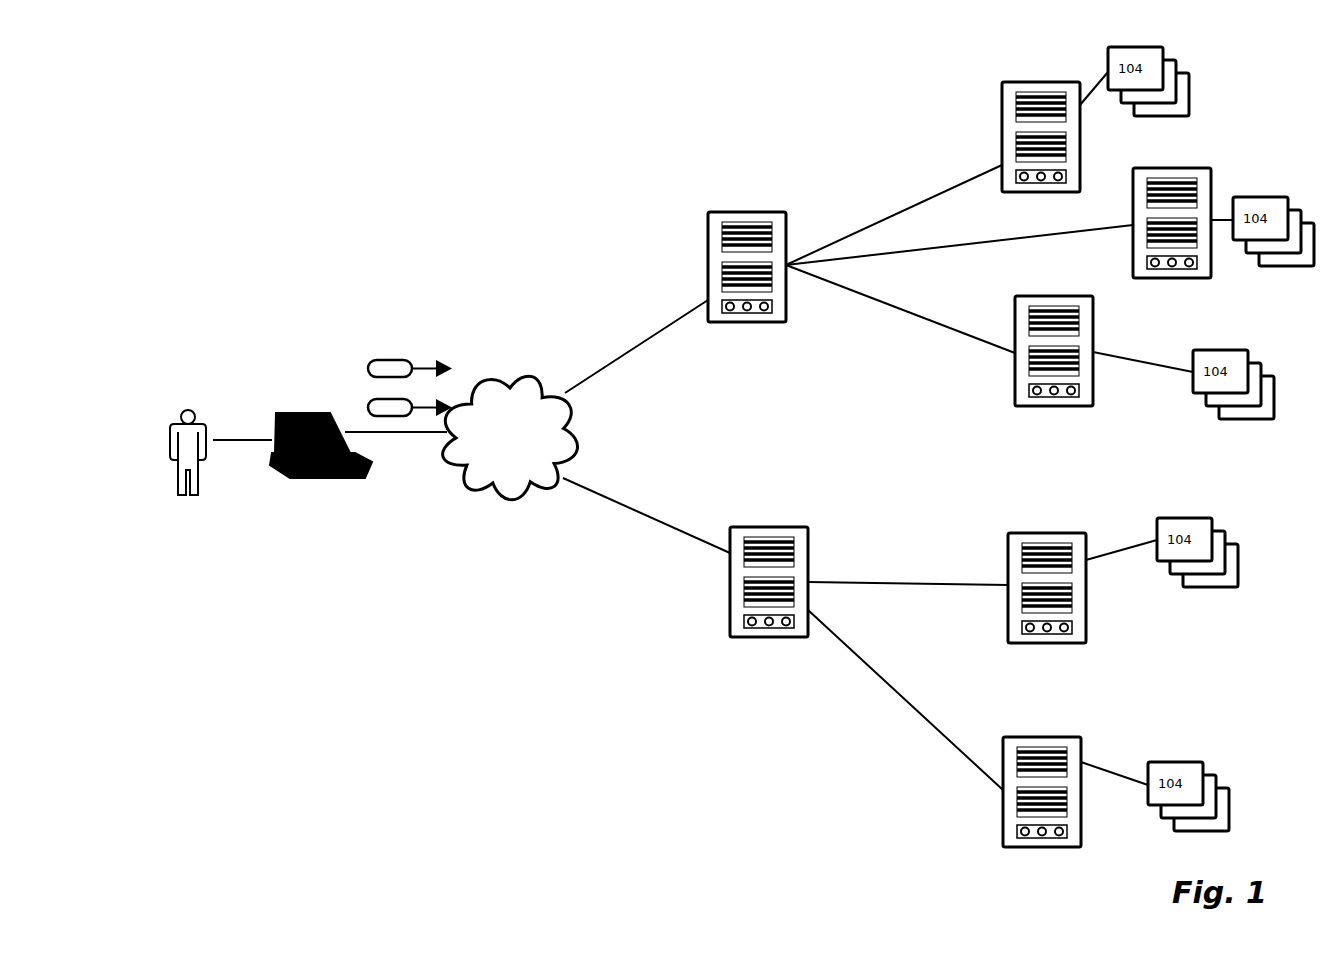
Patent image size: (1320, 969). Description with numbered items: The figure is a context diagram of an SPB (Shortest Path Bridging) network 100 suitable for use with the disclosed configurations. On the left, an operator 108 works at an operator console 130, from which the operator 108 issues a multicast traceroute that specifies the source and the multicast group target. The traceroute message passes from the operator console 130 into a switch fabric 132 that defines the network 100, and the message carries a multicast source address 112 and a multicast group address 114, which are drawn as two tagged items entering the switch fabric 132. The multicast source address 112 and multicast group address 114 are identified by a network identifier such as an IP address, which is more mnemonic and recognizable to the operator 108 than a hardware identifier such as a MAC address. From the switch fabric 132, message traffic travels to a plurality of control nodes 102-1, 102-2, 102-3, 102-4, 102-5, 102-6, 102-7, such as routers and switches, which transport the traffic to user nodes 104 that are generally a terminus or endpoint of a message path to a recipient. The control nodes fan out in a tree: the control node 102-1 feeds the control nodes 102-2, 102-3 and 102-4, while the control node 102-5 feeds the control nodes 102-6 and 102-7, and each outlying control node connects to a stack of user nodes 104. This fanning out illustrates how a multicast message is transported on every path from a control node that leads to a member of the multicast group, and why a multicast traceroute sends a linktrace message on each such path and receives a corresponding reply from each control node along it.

The SPB network 100 is at (492, 166).
The operator 108 is at (185, 410).
The operator console 130 is at (322, 412).
The multicast source address 112 is at (368, 368).
The multicast group address 114 is at (368, 407).
The switch fabric 132 is at (512, 386).
The control node 102-1 is at (708, 265).
The control node 102-2 is at (1002, 137).
The control node 102-3 is at (1170, 168).
The control node 102-4 is at (1015, 312).
The control node 102-5 is at (808, 555).
The control node 102-6 is at (1008, 560).
The control node 102-7 is at (1022, 737).
The user nodes 104 is at (1211, 439).